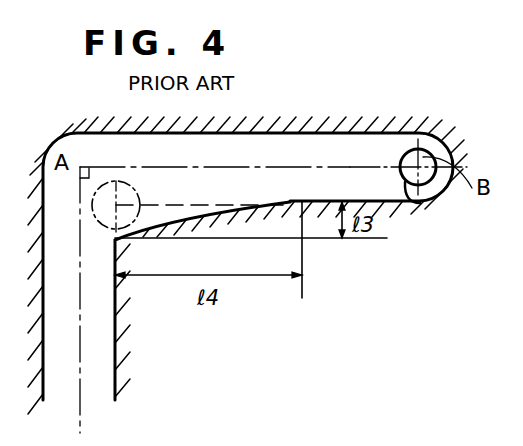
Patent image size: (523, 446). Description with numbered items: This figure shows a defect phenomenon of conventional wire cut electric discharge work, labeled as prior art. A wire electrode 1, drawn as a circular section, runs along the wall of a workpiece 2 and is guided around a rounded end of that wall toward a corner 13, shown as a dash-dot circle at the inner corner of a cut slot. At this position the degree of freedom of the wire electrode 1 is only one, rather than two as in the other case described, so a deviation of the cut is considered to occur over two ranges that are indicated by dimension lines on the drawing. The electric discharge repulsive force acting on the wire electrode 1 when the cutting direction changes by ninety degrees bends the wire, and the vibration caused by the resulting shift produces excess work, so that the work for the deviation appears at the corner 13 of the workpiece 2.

The wire electrode 1 is at (418, 205).
The housing wall 2 is at (416, 130).
The corner 13 is at (135, 193).